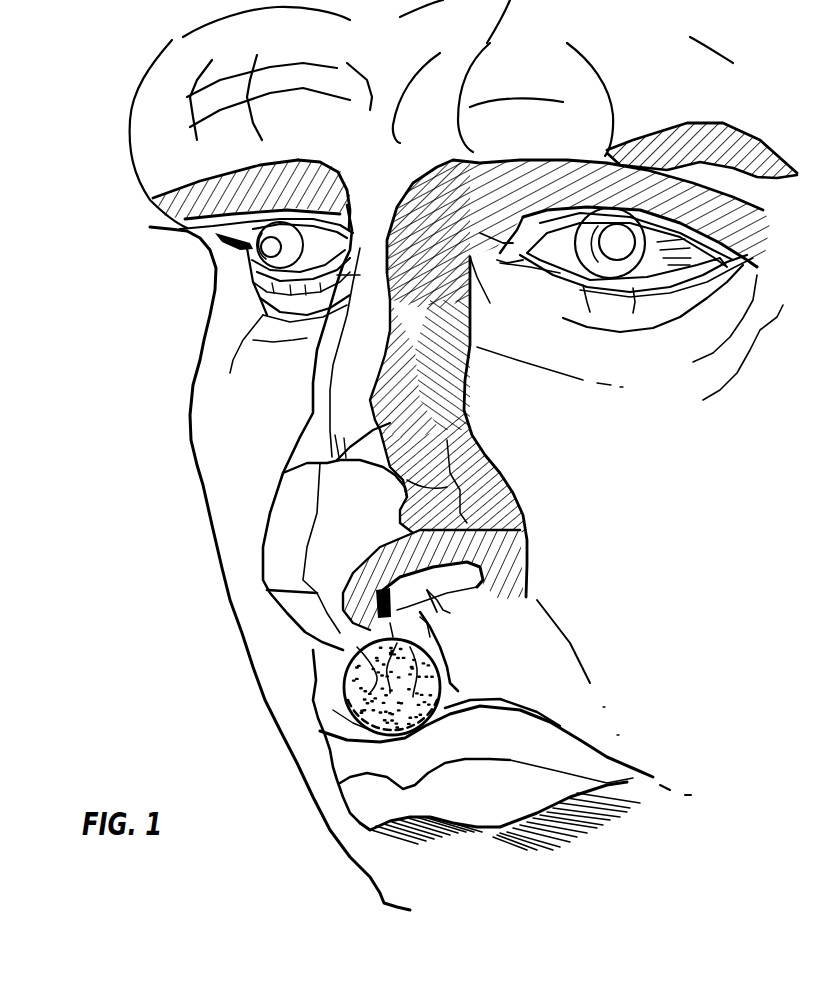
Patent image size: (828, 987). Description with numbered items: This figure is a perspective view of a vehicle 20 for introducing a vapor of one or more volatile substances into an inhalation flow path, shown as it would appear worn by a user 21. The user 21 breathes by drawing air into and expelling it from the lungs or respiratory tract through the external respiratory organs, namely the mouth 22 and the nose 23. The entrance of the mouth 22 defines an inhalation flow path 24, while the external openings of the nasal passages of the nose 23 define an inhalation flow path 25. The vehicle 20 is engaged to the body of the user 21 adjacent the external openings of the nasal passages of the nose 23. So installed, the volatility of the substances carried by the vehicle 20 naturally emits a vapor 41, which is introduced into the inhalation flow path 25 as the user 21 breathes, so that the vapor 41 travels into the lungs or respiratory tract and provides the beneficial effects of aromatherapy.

The vehicle 20 is at (465, 662).
The user 21 is at (214, 470).
The mouth 22 is at (513, 747).
The nose 23 is at (270, 548).
The inhalation flow path 24 is at (500, 805).
The inhalation flow path 25 is at (488, 399).
The vapor 41 is at (313, 686).